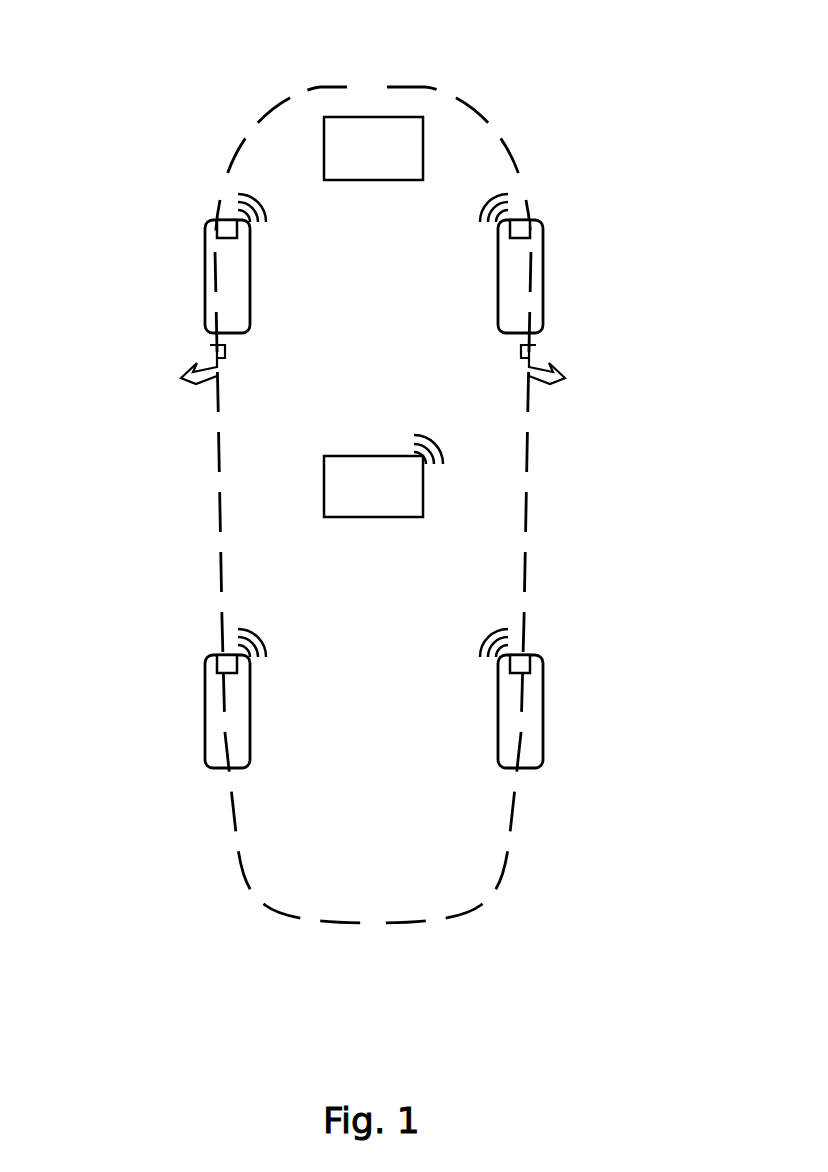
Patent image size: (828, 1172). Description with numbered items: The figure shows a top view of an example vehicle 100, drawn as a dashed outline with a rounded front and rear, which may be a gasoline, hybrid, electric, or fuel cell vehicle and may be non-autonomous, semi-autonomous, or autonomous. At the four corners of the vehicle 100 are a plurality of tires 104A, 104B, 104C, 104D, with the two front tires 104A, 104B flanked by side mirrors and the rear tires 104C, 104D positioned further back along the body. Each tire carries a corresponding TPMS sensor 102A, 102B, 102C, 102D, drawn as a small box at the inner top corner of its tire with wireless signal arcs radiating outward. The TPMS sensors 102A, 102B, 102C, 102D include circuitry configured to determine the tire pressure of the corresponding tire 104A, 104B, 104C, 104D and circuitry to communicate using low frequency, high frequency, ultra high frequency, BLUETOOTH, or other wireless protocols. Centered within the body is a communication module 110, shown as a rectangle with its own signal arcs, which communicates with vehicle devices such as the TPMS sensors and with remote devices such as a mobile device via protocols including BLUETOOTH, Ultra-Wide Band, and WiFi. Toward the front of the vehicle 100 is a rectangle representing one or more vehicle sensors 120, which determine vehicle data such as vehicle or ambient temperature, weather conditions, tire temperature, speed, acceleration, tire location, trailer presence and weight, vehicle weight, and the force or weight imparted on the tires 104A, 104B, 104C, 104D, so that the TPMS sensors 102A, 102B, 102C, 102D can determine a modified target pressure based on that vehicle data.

The vehicle 100 is at (377, 87).
The TPMS sensor 102A is at (207, 225).
The TPMS sensor 102B is at (530, 228).
The TPMS sensor 102C is at (207, 666).
The TPMS sensor 102D is at (530, 668).
The tire 104A is at (205, 313).
The tire 104B is at (543, 307).
The tire 104C is at (205, 734).
The tire 104D is at (543, 734).
The communication module 110 is at (383, 476).
The vehicle sensors 120 is at (373, 148).